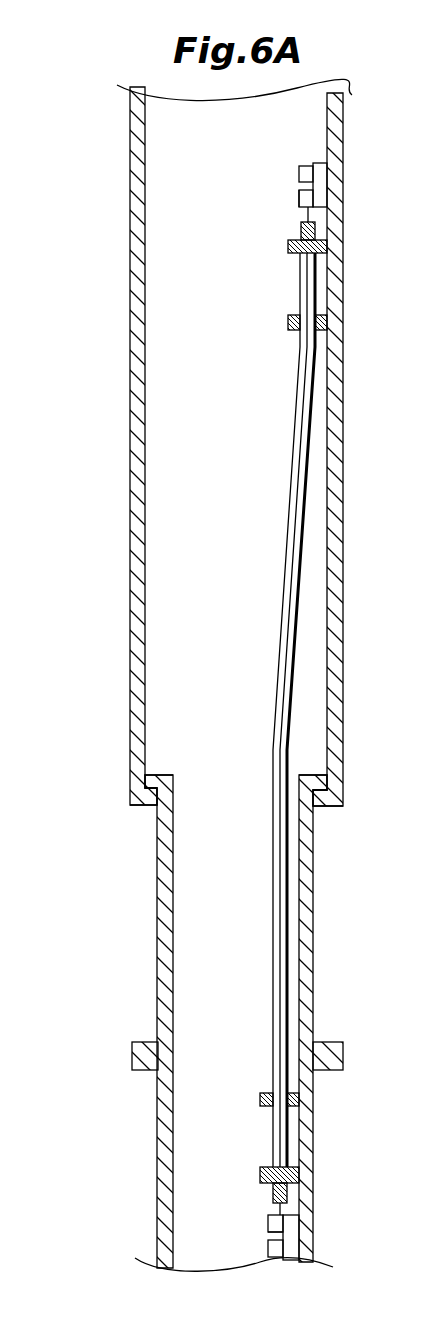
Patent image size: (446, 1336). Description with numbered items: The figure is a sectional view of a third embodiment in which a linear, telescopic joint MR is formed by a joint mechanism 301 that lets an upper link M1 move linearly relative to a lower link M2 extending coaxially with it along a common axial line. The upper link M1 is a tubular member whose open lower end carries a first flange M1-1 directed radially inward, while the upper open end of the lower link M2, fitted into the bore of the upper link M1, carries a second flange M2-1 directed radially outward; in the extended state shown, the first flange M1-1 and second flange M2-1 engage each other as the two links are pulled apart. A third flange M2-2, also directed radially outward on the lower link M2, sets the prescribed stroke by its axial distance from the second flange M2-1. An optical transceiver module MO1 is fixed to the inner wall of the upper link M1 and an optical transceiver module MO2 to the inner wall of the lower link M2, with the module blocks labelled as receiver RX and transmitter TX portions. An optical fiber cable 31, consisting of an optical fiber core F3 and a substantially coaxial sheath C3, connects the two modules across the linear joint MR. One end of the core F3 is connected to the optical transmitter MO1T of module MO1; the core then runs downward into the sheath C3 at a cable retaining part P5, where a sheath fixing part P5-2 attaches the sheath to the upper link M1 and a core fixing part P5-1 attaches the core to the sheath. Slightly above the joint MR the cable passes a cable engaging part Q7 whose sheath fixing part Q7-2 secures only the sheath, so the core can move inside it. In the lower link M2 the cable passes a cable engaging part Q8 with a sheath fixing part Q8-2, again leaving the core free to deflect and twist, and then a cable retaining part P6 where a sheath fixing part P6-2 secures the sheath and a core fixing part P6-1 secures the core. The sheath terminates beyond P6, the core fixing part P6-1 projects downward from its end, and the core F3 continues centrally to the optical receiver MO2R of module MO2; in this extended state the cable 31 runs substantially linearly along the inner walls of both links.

The joint mechanism 301 is at (239, 675).
The upper link M1 is at (230, 465).
The first flange M1-1 is at (240, 815).
The lower link M2 is at (241, 1003).
The second flange M2-1 is at (388, 752).
The third flange M2-2 is at (191, 1059).
The linear joint MR is at (330, 906).
The optical fiber cable 31 is at (346, 710).
The sheath C3 is at (311, 418).
The optical fiber core F3 is at (303, 445).
The receiver RX is at (229, 1230).
The transmitter TX is at (312, 190).
The optical transceiver module MO1 is at (327, 190).
The optical transmitter MO1T is at (297, 198).
The cable retaining part P5 is at (309, 242).
The core fixing part P5-1 is at (301, 230).
The sheath fixing part P5-2 is at (288, 247).
The cable engaging part Q7 is at (313, 333).
The sheath fixing part Q7-2 is at (288, 322).
The cable engaging part Q8 is at (307, 1081).
The sheath fixing part Q8-2 is at (263, 1093).
The cable retaining part P6 is at (300, 1162).
The core fixing part P6-1 is at (287, 1193).
The sheath fixing part P6-2 is at (261, 1168).
The optical transceiver module MO2 is at (292, 1233).
The optical receiver MO2R is at (268, 1225).